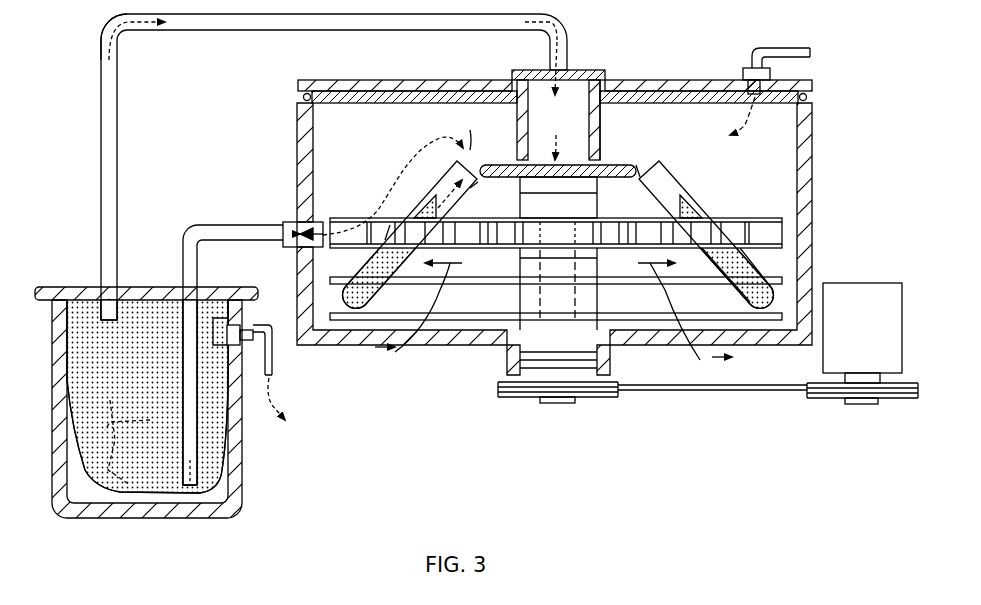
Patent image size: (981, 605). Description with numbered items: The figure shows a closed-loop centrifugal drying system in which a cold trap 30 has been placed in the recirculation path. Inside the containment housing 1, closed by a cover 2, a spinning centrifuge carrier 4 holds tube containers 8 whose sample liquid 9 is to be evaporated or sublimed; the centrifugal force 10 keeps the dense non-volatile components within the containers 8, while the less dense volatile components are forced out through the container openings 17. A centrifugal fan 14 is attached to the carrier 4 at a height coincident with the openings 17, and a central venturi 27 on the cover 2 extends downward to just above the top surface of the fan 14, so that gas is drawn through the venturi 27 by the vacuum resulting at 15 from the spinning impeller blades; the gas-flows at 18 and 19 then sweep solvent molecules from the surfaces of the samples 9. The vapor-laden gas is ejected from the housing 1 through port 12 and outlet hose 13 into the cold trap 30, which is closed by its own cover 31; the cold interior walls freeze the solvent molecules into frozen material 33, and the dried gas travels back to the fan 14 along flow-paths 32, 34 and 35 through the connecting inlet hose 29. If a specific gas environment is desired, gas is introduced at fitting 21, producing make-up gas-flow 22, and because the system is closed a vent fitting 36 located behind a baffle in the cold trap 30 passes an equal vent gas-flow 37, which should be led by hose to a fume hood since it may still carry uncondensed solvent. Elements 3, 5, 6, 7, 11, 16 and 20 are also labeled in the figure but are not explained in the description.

The housing 1 is at (297, 125).
The cover 2 is at (345, 80).
The seal 3 is at (367, 103).
The centrifuge carrier 4 is at (757, 218).
The drive pulley 5 is at (498, 386).
The belt 6 is at (668, 385).
The motor 7 is at (823, 366).
The containers 8 is at (688, 195).
The samples 9 is at (738, 298).
The centrifugal force 10 is at (372, 378).
The rotor chamber 11 is at (390, 235).
The port 12 is at (330, 220).
The outlet hose 13 is at (228, 225).
The centrifugal fan 14 is at (500, 165).
The vacuum 15 is at (558, 101).
The plate edge 16 is at (640, 165).
The container openings 17 is at (466, 129).
The gas-flow 18 is at (475, 182).
The gas-flow 19 is at (450, 182).
The flow path 20 is at (396, 168).
The fitting 21 is at (743, 73).
The make-up gas-flow 22 is at (750, 124).
The central venturi 27 is at (603, 122).
The inlet hose 29 is at (236, 30).
The cold trap 30 is at (240, 488).
The cover 31 is at (70, 287).
The flow-path 32 is at (110, 430).
The frozen solvent molecules 33 is at (233, 460).
The flow-path 34 is at (117, 52).
The flow-path 35 is at (567, 42).
The vent fitting 36 is at (272, 362).
The vent gas-flow 37 is at (278, 413).